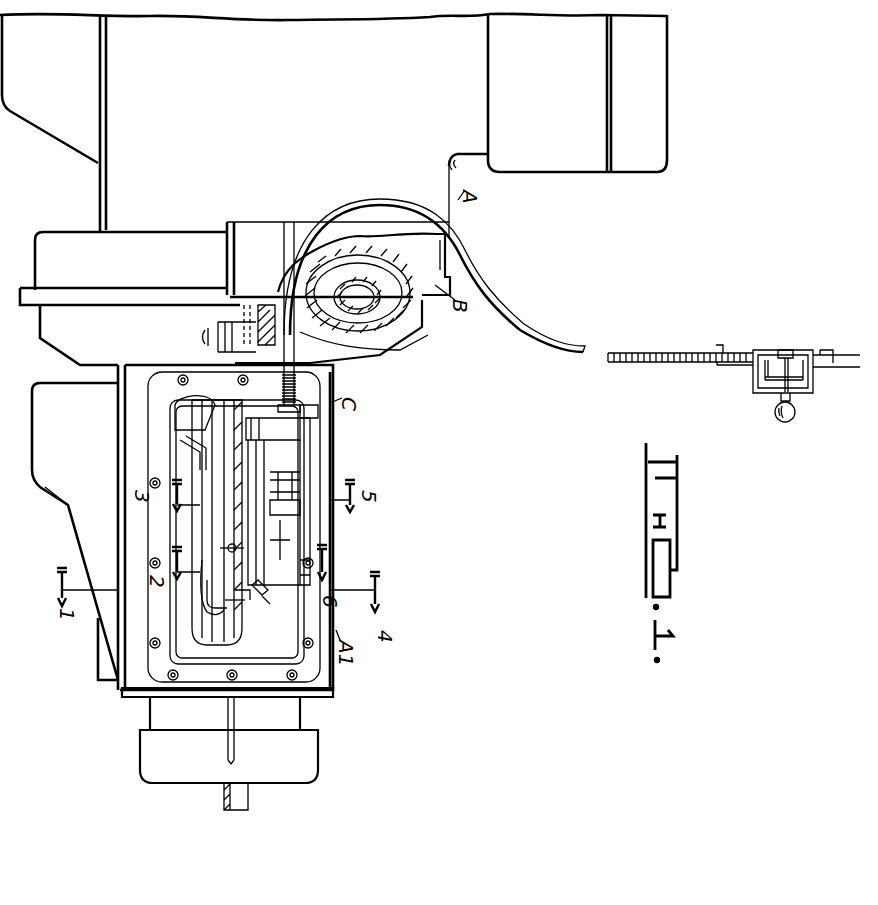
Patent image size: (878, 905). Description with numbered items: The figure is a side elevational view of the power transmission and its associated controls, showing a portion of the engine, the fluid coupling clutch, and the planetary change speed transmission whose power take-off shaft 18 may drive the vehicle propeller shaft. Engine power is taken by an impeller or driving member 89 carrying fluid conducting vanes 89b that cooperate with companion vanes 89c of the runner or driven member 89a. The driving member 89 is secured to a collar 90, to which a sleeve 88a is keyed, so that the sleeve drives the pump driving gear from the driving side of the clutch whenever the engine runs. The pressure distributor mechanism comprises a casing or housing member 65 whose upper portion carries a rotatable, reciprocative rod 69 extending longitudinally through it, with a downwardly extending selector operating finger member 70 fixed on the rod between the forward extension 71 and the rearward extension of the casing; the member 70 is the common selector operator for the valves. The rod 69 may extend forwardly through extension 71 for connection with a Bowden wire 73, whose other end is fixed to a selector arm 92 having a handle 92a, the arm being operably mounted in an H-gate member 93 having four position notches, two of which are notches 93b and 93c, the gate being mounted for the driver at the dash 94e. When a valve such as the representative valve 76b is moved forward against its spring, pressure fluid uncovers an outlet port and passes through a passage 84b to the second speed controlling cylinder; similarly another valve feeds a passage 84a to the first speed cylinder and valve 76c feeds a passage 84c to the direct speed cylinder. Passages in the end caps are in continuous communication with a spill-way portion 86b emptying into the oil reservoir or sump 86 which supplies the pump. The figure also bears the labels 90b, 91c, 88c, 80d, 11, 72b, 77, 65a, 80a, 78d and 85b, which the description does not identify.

The companion vanes 89c is at (316, 270).
The impeller or driving member 89 is at (392, 345).
The runner or driven member 89a is at (405, 284).
The fluid conducting vanes 89b is at (372, 330).
The collar 90 is at (282, 398).
The pipe block 90b is at (258, 306).
The passage 91c is at (246, 308).
The sleeve 88a is at (226, 330).
The sleeve end 88c is at (210, 352).
The spill-way portion 86b is at (178, 418).
The passage 84c is at (192, 458).
The passage 84b is at (192, 525).
The passage 84a is at (202, 580).
The lever 80d is at (212, 612).
The crossbar 11 is at (278, 440).
The selector operating finger member 70 is at (258, 478).
The forward extension 71 is at (308, 450).
The valve 76b is at (296, 490).
The valve seat 72b is at (302, 515).
The pivot pin 77 is at (236, 550).
The valve 76c is at (276, 550).
The rotatable reciprocative rod 69 is at (316, 545).
The casing or housing member 65 is at (266, 592).
The cam lobe 65a is at (264, 600).
The lever arm 80a is at (248, 602).
The link 78d is at (236, 604).
The fitting 85b is at (306, 405).
The oil reservoir or sump 86 is at (50, 488).
The power take-off shaft 18 is at (248, 795).
The Bowden wire 73 is at (610, 356).
The H-gate member 93 is at (800, 396).
The position notch 93b is at (787, 352).
The position notch 93c is at (764, 360).
The selector arm 92 is at (774, 395).
The handle 92a is at (792, 420).
The dash 94e is at (834, 368).